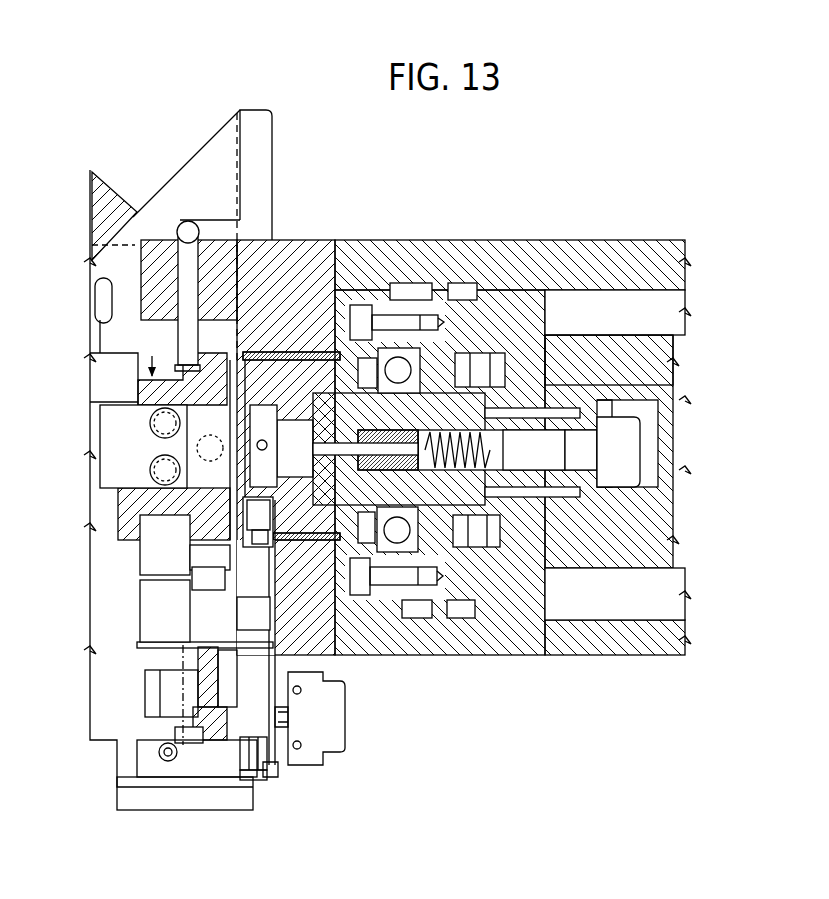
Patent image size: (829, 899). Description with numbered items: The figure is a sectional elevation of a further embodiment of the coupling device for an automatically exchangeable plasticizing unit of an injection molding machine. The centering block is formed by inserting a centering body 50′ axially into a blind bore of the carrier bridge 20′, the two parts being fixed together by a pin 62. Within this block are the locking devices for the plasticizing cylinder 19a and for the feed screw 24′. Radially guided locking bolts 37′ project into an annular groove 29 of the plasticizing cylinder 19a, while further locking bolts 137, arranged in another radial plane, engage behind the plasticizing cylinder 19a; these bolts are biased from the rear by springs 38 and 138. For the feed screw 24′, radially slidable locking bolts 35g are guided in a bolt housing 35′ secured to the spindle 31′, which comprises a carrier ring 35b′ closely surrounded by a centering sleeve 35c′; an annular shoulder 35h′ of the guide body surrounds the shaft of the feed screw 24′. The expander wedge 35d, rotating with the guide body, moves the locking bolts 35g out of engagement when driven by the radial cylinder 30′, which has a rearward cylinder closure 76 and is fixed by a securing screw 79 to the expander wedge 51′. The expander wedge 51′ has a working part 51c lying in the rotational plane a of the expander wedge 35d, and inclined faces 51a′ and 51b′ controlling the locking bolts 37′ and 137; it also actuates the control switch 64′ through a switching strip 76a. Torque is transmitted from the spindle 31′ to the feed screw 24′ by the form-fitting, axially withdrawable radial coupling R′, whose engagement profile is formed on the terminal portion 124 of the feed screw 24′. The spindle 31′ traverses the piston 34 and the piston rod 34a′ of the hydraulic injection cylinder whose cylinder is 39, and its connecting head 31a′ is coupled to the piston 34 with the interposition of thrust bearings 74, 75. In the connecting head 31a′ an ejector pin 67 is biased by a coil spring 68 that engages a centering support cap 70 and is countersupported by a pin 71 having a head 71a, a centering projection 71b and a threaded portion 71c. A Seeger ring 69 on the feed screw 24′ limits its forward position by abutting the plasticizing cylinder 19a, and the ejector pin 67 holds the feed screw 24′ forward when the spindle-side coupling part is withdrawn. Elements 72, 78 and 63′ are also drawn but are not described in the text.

The carrier bridge 20′ is at (210, 138).
The locking bolts 35g is at (256, 265).
The centering body 50′ is at (283, 335).
The centering sleeve 35c′ is at (262, 392).
The rearward cylinder closure 76 is at (360, 300).
The thrust bearing 74 is at (416, 305).
The thrust bearing 75 is at (482, 355).
The sleeve 72 is at (632, 380).
The centering support cap 70 is at (558, 320).
The coil spring 68 is at (556, 350).
The pin 71 is at (650, 432).
The head 71a is at (635, 453).
The centering projection 71b is at (497, 455).
The threaded portion 71c is at (579, 497).
The pin 62 is at (185, 272).
The locking bolts 137 is at (230, 330).
The locking bolts 37′ is at (245, 335).
The annular groove 29 is at (150, 345).
The plasticizing cylinder 19a is at (235, 394).
The annular shoulder 35h′ is at (250, 430).
The springs 38 is at (160, 440).
The bolt housing 35′ is at (255, 468).
The springs 138 is at (215, 480).
The terminal portion 124 is at (170, 505).
The Seeger ring 69 is at (175, 530).
The expander wedge 35d is at (230, 548).
The expander wedge 51′ is at (137, 627).
The securing screw 79 is at (165, 668).
The radial cylinder 30′ is at (200, 693).
The feed screw 24′ is at (204, 463).
The radial coupling R′ is at (300, 456).
The rotational plane a is at (260, 487).
The inclined face 51a′ is at (175, 614).
The inclined face 51b′ is at (265, 578).
The driving portion 51c is at (262, 627).
The switching strip 76a is at (278, 655).
The carrier ring 35b′ is at (337, 655).
The ball bearing 78 is at (368, 655).
The ejector pin 67 is at (426, 655).
The cylinder 39 is at (473, 655).
The connecting head 31a′ is at (506, 655).
The piston 34 is at (547, 655).
The piston rod 34a′ is at (618, 620).
The spindle 31′ is at (552, 545).
The control switch 64′ is at (323, 738).
The cam 63′ is at (260, 787).